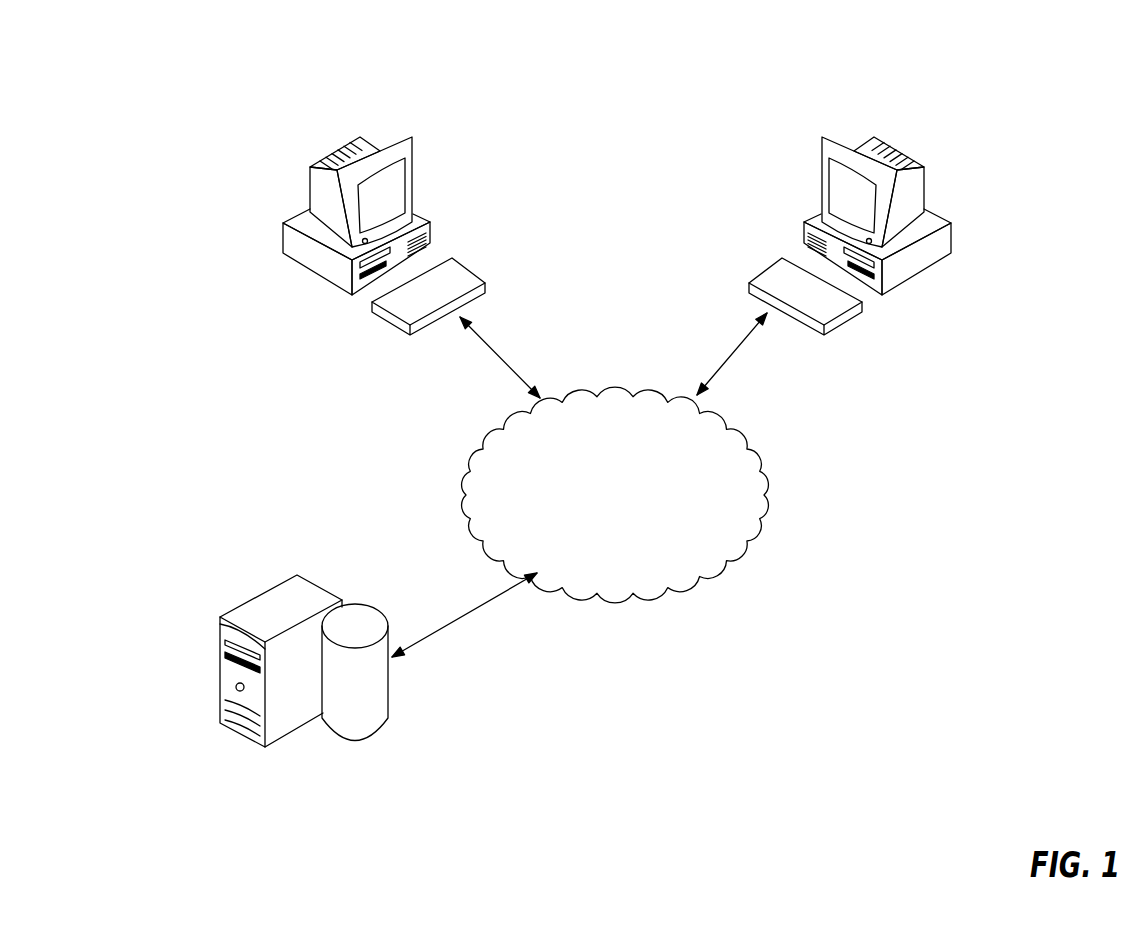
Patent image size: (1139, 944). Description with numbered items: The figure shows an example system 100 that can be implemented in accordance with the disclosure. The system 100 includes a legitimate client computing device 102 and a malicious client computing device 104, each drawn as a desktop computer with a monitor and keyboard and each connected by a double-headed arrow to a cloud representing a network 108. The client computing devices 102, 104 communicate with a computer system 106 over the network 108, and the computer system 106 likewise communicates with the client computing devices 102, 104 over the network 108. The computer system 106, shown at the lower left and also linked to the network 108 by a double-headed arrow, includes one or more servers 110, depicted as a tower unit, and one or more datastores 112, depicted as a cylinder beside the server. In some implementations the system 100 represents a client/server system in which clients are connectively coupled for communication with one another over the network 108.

The system 100 is at (197, 113).
The legitimate client computing device 102 is at (927, 192).
The malicious client computing device 104 is at (307, 187).
The computer system 106 is at (329, 633).
The network 108 is at (770, 498).
The server 110 is at (297, 575).
The datastore 112 is at (380, 730).